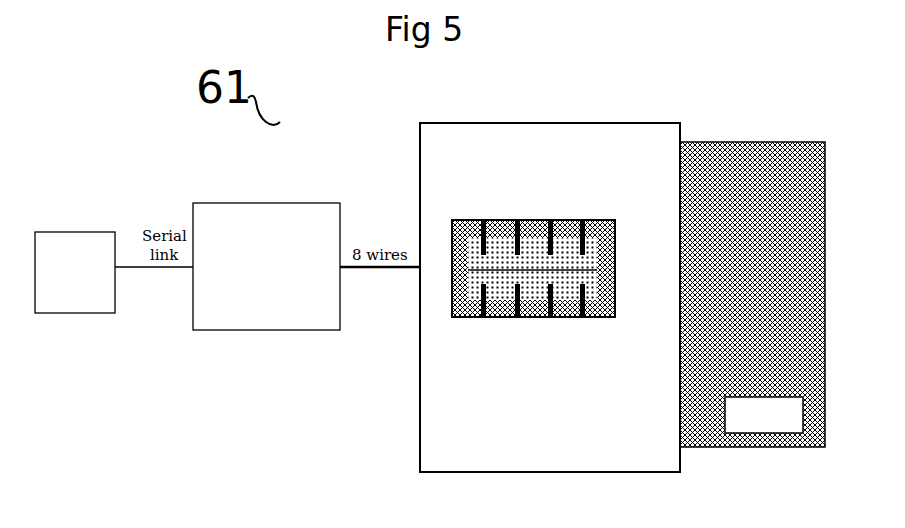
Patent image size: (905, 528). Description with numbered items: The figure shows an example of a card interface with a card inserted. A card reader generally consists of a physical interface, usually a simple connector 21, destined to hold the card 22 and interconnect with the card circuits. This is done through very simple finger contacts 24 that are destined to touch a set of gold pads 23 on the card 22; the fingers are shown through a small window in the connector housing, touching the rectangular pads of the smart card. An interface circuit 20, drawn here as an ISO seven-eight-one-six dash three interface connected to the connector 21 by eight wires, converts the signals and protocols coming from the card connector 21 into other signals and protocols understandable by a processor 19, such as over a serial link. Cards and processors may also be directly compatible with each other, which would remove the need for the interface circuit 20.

The processor 19 is at (77, 245).
The interface circuit 20 is at (267, 222).
The connector 21 is at (580, 136).
The card 22 is at (738, 160).
The gold pads 23 is at (533, 316).
The finger contacts 24 is at (480, 316).